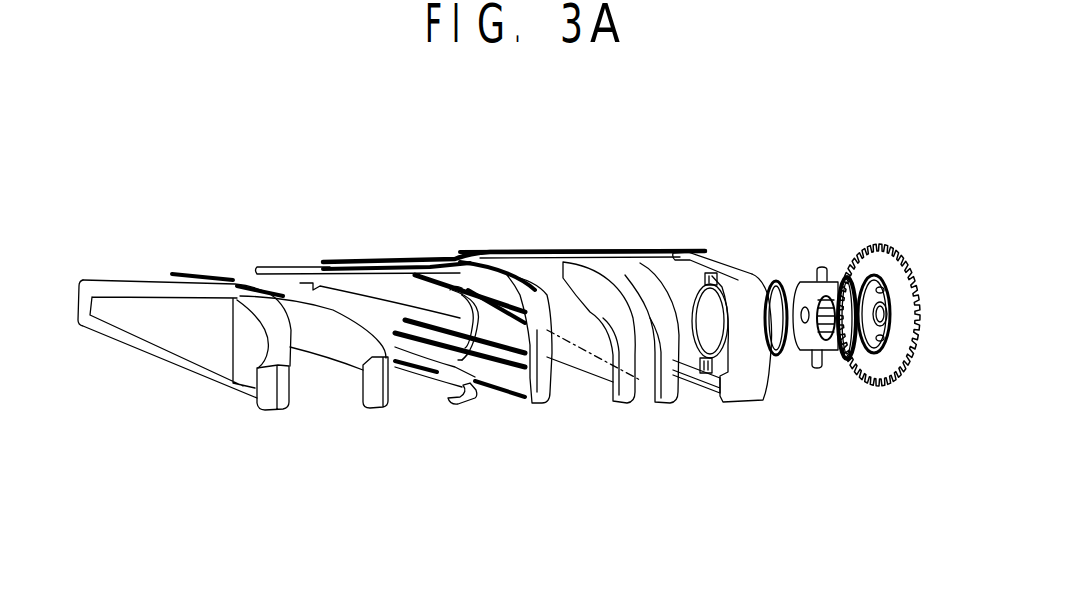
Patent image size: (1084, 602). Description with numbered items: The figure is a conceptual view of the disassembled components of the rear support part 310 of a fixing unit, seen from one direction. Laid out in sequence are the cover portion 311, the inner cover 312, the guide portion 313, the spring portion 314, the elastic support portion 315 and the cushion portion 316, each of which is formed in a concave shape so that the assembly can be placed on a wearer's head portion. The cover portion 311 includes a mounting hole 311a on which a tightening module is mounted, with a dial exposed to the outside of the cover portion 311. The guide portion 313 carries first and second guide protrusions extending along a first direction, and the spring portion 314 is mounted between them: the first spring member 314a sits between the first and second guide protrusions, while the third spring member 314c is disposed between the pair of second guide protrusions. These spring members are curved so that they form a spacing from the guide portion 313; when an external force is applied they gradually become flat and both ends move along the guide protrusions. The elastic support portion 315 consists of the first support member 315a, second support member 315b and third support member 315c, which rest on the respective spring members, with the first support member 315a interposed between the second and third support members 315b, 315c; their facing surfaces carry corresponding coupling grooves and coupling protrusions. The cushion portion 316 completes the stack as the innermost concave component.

The rear support part 310 is at (428, 118).
The cover portion 311 is at (691, 255).
The mounting hole 311a is at (711, 324).
The inner cover 312 is at (613, 272).
The guide portion 313 is at (533, 290).
The spring portion 314 is at (612, 488).
The first spring member 314a is at (502, 327).
The third spring member 314c is at (482, 383).
The elastic support portion 315 is at (440, 196).
The first support member 315a is at (298, 320).
The second support member 315b is at (372, 288).
The third support member 315c is at (399, 357).
The cushion portion 316 is at (132, 307).